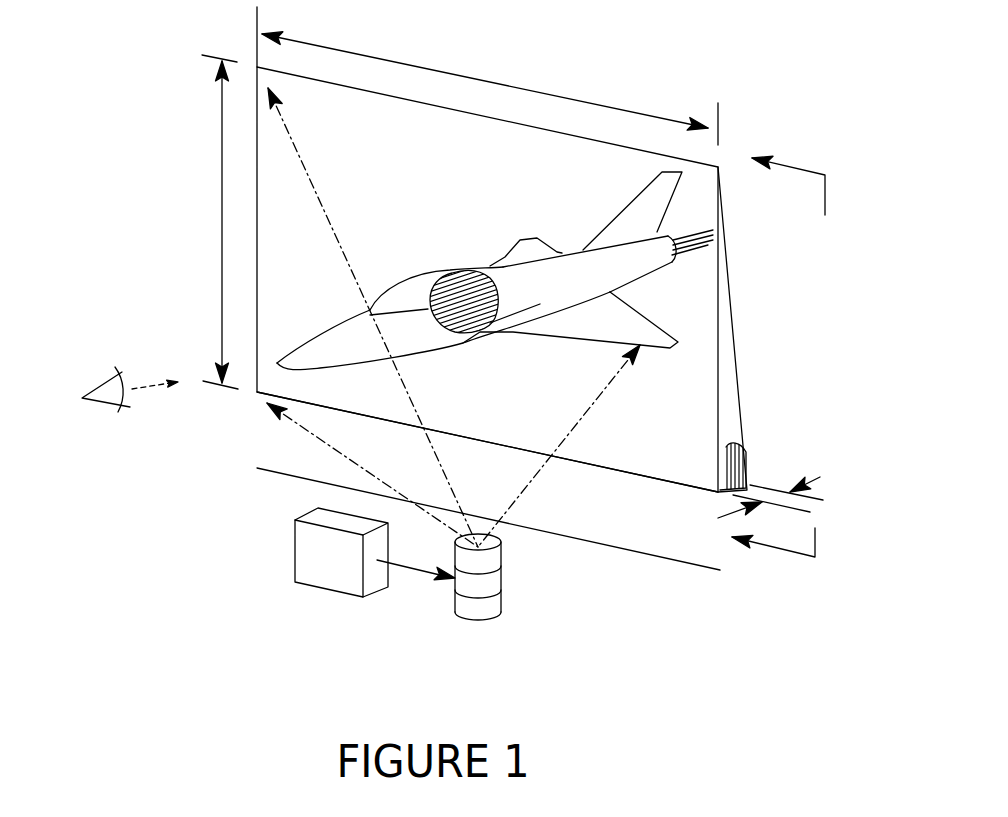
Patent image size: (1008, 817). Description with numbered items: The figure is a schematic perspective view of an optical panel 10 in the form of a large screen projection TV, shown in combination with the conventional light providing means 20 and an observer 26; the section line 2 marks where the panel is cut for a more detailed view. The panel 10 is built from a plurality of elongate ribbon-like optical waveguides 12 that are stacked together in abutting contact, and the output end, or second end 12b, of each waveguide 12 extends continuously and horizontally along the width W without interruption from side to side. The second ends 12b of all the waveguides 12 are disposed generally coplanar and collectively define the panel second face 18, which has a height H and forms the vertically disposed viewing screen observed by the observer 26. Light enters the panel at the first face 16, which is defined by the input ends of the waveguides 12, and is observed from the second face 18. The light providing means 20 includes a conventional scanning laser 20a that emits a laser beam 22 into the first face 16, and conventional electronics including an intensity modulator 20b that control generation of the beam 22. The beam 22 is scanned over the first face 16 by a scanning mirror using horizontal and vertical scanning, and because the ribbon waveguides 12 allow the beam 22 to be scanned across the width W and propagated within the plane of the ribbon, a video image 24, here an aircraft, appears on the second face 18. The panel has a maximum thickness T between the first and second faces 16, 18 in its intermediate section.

The section line 2- 2 is at (778, 353).
The optical panel 10 is at (733, 298).
The optical waveguide 12 is at (745, 466).
The second end 12b is at (452, 285).
The first face 16 is at (717, 492).
The second face 18 is at (602, 447).
The light providing means 20 is at (403, 599).
The scanning laser 20a is at (490, 607).
The intensity modulator 20b is at (318, 588).
The light beam 22 is at (453, 483).
The video image 24 is at (495, 271).
The observer 26 is at (100, 400).
The height H is at (221, 216).
The width W is at (483, 80).
The maximum thickness T is at (820, 477).